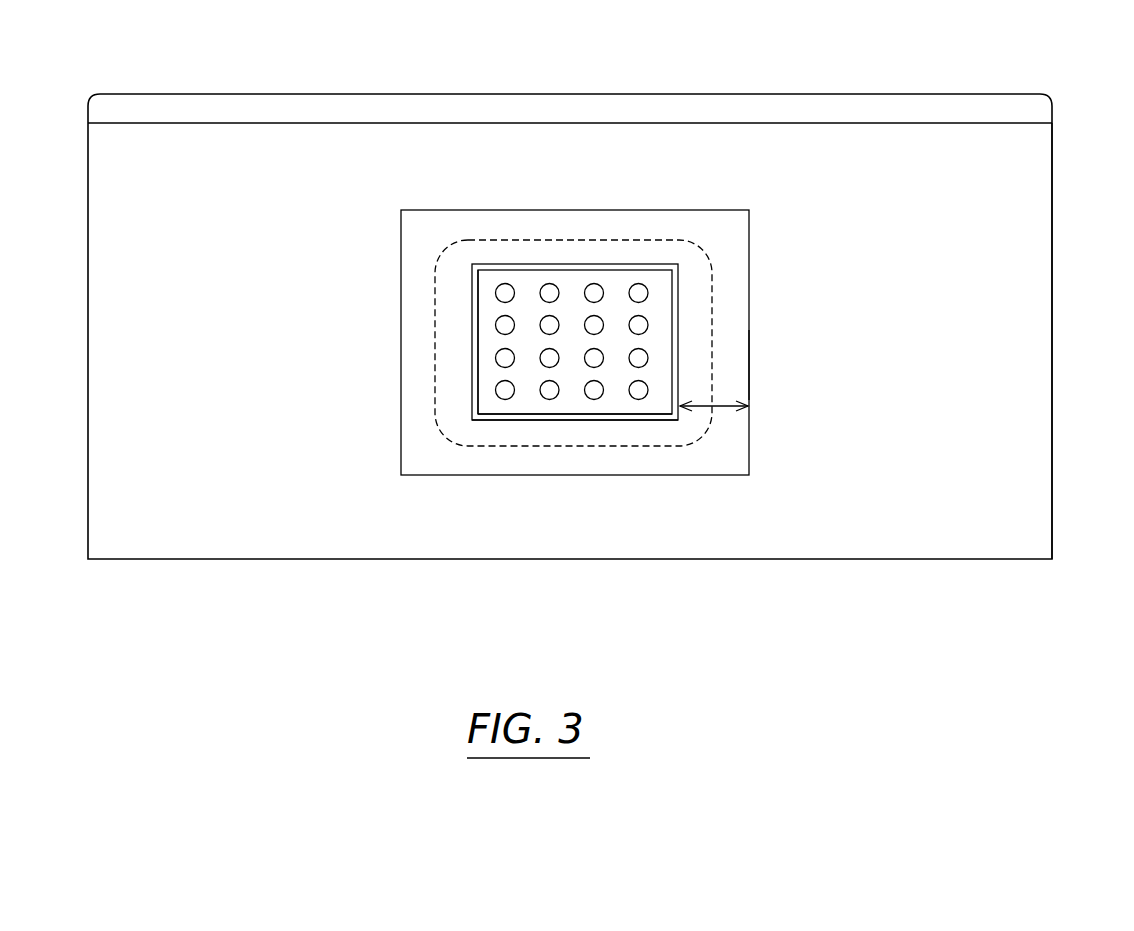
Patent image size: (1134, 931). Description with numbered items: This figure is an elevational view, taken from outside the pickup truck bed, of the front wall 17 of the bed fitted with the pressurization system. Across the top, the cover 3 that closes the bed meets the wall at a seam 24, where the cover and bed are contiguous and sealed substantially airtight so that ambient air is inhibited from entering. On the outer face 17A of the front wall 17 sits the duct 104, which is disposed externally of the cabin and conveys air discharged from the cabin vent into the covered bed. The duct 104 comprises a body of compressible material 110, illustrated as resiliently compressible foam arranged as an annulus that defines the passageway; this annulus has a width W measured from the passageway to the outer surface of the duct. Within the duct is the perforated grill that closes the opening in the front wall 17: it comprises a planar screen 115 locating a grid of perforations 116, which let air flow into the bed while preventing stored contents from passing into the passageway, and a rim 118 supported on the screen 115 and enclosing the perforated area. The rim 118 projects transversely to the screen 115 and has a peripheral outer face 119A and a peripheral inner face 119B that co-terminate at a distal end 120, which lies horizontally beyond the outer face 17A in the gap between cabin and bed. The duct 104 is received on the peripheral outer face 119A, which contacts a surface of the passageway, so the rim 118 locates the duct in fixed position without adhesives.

The cover 3 is at (932, 94).
The seams 24 is at (1054, 124).
The front wall 17 is at (1053, 160).
The outer face 17A is at (1013, 227).
The body of compressible material 110 is at (720, 467).
The duct 104 is at (750, 366).
The screen 115 is at (525, 283).
The rim 118 is at (680, 351).
The peripheral outer face 119A is at (562, 420).
The peripheral inner face 119B is at (538, 404).
The distal end 120 is at (615, 413).
The perforations 116 is at (597, 287).
The width W is at (720, 410).